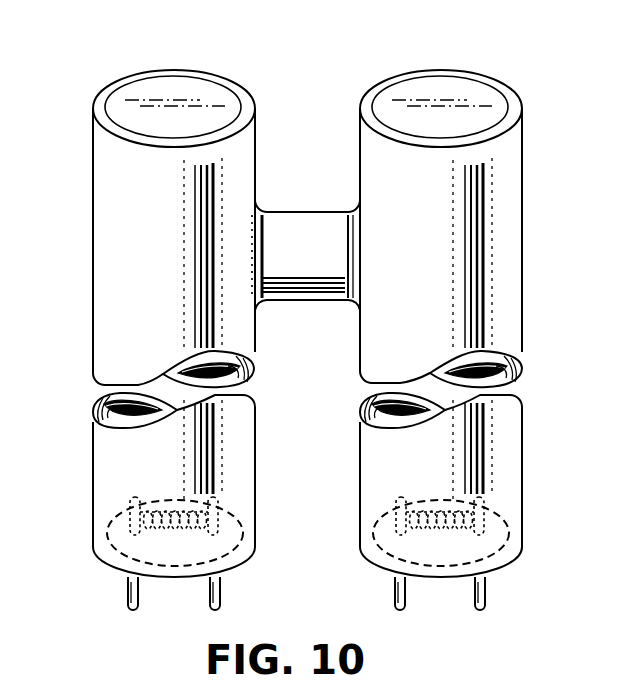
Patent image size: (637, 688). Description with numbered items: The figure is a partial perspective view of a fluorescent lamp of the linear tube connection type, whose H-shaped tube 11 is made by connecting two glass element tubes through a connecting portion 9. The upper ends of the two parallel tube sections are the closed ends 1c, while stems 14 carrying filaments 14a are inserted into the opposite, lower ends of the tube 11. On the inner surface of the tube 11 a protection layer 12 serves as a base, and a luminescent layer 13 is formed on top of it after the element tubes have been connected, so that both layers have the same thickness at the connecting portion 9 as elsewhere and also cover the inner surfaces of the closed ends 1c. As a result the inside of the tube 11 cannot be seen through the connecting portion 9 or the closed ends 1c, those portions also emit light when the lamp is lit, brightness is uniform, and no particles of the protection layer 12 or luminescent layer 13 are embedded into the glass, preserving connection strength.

The closed end 1c is at (160, 90).
The connecting portion 9 is at (302, 222).
The tube 11 is at (531, 67).
The protection layer 12 is at (249, 376).
The luminescent layer 13 is at (245, 360).
The stem 14 is at (232, 567).
The filament 14a is at (107, 544).